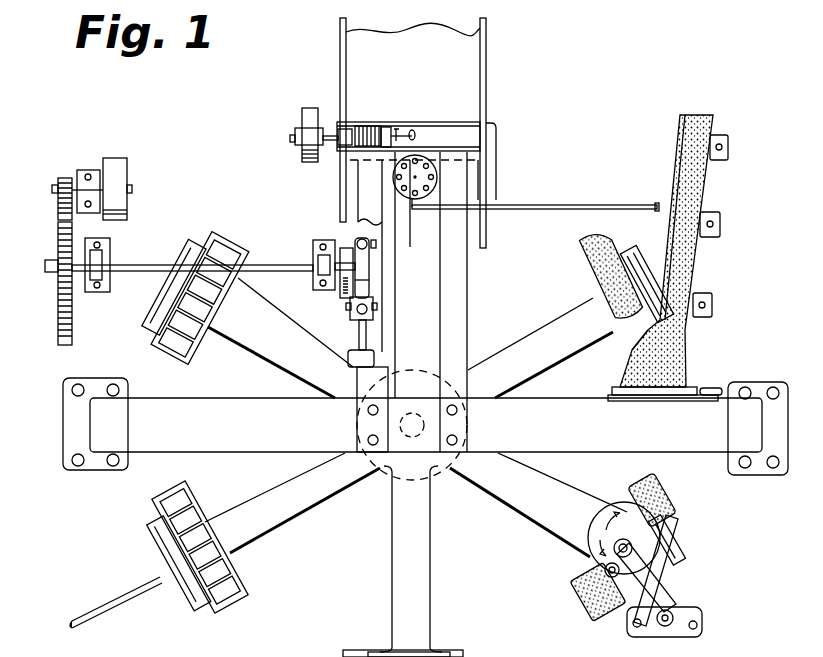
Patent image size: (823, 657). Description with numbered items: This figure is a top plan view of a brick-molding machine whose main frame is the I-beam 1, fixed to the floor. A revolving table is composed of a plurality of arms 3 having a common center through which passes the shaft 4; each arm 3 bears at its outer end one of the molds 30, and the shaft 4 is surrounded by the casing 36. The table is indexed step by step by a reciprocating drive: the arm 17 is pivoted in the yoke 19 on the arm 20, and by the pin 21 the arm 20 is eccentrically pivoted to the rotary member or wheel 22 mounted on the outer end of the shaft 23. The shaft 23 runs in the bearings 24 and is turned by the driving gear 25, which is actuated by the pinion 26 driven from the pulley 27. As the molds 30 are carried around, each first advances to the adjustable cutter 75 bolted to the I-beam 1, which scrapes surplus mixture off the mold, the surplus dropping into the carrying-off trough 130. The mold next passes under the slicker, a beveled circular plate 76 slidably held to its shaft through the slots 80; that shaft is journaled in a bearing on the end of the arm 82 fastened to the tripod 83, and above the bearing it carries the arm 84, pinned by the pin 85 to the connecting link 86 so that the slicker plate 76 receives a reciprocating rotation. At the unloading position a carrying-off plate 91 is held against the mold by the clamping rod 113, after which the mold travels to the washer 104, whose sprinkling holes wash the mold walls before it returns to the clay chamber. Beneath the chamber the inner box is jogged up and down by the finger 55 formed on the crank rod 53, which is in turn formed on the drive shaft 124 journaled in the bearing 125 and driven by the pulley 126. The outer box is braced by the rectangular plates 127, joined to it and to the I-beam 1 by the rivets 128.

The I-beam 1 is at (425, 426).
The arms 3 is at (416, 402).
The shaft 4 is at (447, 482).
The arm 17 is at (366, 350).
The yoke 19 is at (370, 310).
The arm 20 is at (369, 280).
The pin 21 is at (370, 248).
The rotary member or wheel 22 is at (352, 295).
The shaft 23 is at (290, 267).
The bearings 24 is at (102, 268).
The driving gear 25 is at (60, 316).
The pinion 26 is at (65, 178).
The pulley 27 is at (118, 180).
The molds 30 is at (205, 335).
The casing 36 is at (385, 472).
The rod 53 is at (397, 130).
The finger 55 is at (414, 130).
The adjustable cutter 75 is at (690, 385).
The beveled circular plate 76 is at (662, 498).
The slots 80 is at (598, 592).
The arm 82 is at (660, 590).
The tripod 83 is at (680, 620).
The arm 84 is at (609, 513).
The pin 85 is at (604, 576).
The connecting link 86 is at (635, 620).
The carrying-off plate 91 is at (468, 656).
The washer 104 is at (250, 603).
The clamping rod 113 is at (212, 245).
The drive shaft 124 is at (368, 125).
The bearing 125 is at (340, 128).
The pulley 126 is at (303, 122).
The rectangular plates 127 is at (457, 318).
The rivets 128 is at (368, 440).
The carrying-off trough 130 is at (682, 273).